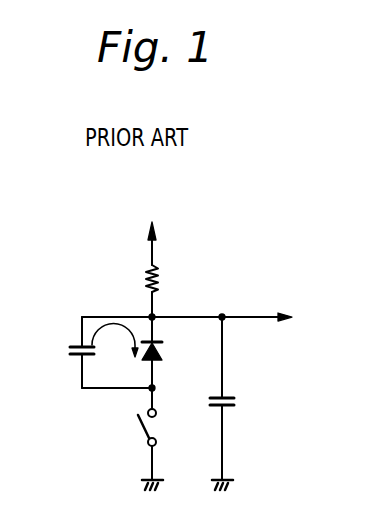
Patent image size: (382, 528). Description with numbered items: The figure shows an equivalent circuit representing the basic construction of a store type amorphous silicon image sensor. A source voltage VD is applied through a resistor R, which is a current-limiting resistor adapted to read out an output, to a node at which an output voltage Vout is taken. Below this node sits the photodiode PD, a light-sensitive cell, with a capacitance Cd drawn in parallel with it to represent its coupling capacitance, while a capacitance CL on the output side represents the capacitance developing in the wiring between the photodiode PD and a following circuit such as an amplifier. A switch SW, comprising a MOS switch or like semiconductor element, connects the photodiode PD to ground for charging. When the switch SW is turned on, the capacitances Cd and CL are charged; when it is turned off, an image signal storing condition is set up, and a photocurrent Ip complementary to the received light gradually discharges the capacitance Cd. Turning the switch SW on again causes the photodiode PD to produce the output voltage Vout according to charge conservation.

The source voltage VD is at (154, 220).
The resistor R is at (163, 273).
The output voltage Vout is at (312, 320).
The capacitance Cd is at (68, 353).
The photocurrent Ip is at (114, 323).
The photodiode PD is at (163, 353).
The switch SW is at (140, 430).
The capacitance CL is at (238, 404).